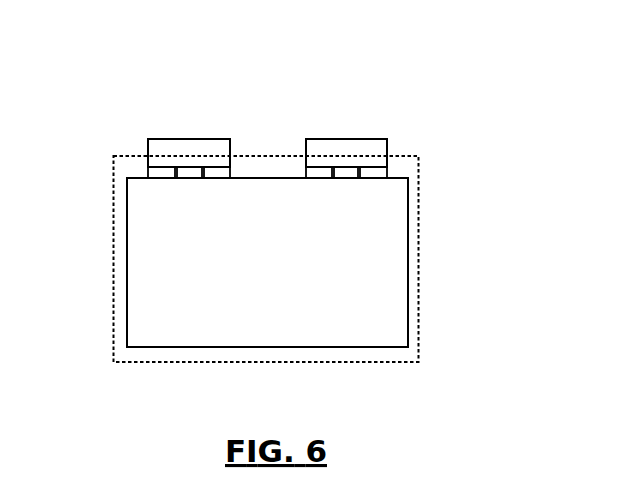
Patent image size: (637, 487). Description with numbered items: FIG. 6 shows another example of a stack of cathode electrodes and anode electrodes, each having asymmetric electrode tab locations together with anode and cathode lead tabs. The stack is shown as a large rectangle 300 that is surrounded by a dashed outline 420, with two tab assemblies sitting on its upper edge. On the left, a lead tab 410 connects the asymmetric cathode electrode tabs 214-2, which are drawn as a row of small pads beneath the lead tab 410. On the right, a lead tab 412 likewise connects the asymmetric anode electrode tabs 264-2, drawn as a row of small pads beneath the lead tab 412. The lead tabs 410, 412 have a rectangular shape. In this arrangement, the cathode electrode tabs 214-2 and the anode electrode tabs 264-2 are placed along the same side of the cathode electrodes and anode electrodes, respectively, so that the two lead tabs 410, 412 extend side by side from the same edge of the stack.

The package outline 420 is at (416, 278).
The substrate 300 is at (405, 239).
The lead tab 410 is at (168, 139).
The cathode electrode tab 214-2 is at (148, 173).
The lead tab 412 is at (376, 139).
The anode electrode tab 264-2 is at (306, 173).